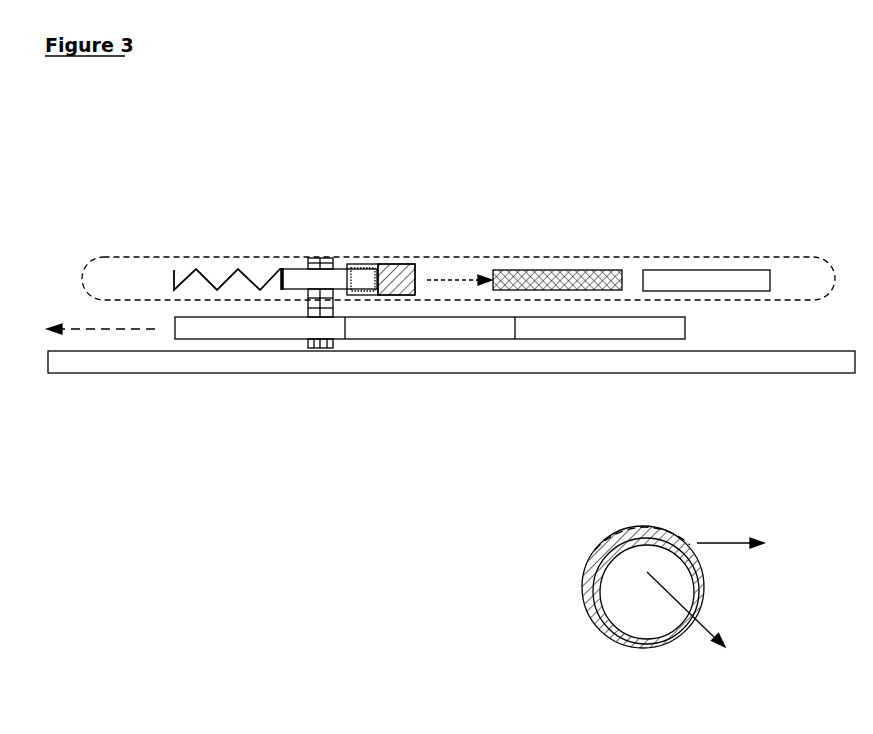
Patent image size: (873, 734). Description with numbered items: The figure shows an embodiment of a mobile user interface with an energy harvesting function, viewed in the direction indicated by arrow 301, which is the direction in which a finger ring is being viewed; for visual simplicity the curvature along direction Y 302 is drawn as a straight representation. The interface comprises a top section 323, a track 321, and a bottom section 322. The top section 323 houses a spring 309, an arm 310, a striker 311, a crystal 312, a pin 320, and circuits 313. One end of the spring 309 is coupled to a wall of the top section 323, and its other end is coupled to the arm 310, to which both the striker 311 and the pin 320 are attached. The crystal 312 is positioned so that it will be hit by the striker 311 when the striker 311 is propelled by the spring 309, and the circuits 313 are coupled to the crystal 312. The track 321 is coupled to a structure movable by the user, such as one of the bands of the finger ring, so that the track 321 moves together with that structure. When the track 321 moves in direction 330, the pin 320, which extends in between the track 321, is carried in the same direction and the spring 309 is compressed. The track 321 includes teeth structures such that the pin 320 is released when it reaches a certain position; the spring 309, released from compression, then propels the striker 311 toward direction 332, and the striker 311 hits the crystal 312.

The spring 309 is at (196, 268).
The arm 310 is at (300, 280).
The striker 311 is at (380, 264).
The crystal 312 is at (520, 270).
The circuits 313 is at (707, 270).
The pin 320 is at (322, 348).
The track 321 is at (429, 327).
The bottom section 322 is at (570, 365).
The top section 323 is at (647, 257).
The direction 330 is at (118, 329).
The direction 332 is at (457, 277).
The arrow 301 is at (769, 674).
The direction Y 302 is at (796, 569).